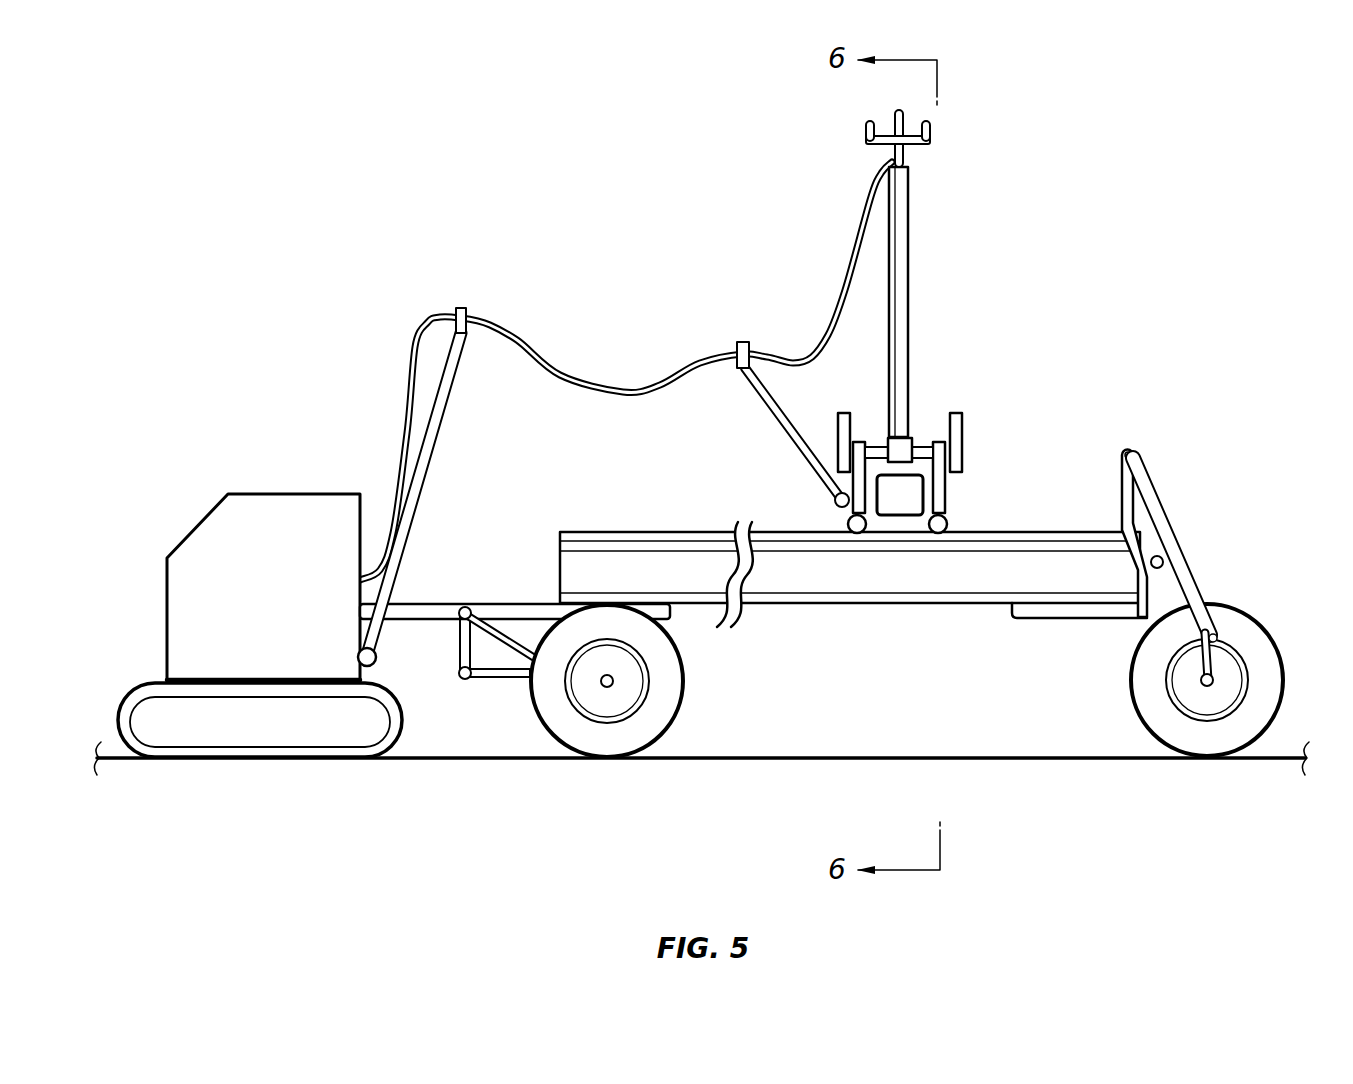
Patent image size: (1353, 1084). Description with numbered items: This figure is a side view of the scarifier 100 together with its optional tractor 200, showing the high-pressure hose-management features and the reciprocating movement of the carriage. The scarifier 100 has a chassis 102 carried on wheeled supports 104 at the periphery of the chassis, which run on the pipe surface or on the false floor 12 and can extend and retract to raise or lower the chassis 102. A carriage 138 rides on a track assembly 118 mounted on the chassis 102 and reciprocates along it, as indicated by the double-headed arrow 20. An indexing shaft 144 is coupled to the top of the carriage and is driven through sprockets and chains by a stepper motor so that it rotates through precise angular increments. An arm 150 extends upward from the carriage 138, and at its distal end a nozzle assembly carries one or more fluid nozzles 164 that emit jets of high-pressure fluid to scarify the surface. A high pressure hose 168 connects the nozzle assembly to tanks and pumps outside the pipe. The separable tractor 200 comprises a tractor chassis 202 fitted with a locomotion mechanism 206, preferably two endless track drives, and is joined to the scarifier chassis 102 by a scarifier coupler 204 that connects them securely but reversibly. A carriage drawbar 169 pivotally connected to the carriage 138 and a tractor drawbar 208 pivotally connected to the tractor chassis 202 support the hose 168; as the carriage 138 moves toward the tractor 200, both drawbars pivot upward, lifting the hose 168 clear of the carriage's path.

The scarifier 100 is at (337, 197).
The tractor 200 is at (260, 601).
The tractor chassis 202 is at (283, 494).
The scarifier coupler 204 is at (422, 613).
The locomotion mechanism 206 is at (256, 723).
The tractor drawbar 208 is at (456, 308).
The high pressure hose 168 is at (613, 383).
The carriage drawbar 169 is at (742, 342).
The chassis 102 is at (853, 636).
The wheeled supports 104 is at (523, 717).
The false floor 12 is at (828, 768).
The track assembly 118 is at (780, 513).
The double-headed arrow 20 is at (943, 567).
The carriage 138 is at (930, 440).
The indexing shaft 144 is at (925, 428).
The arm 150 is at (920, 251).
The fluid nozzle 164 is at (866, 128).